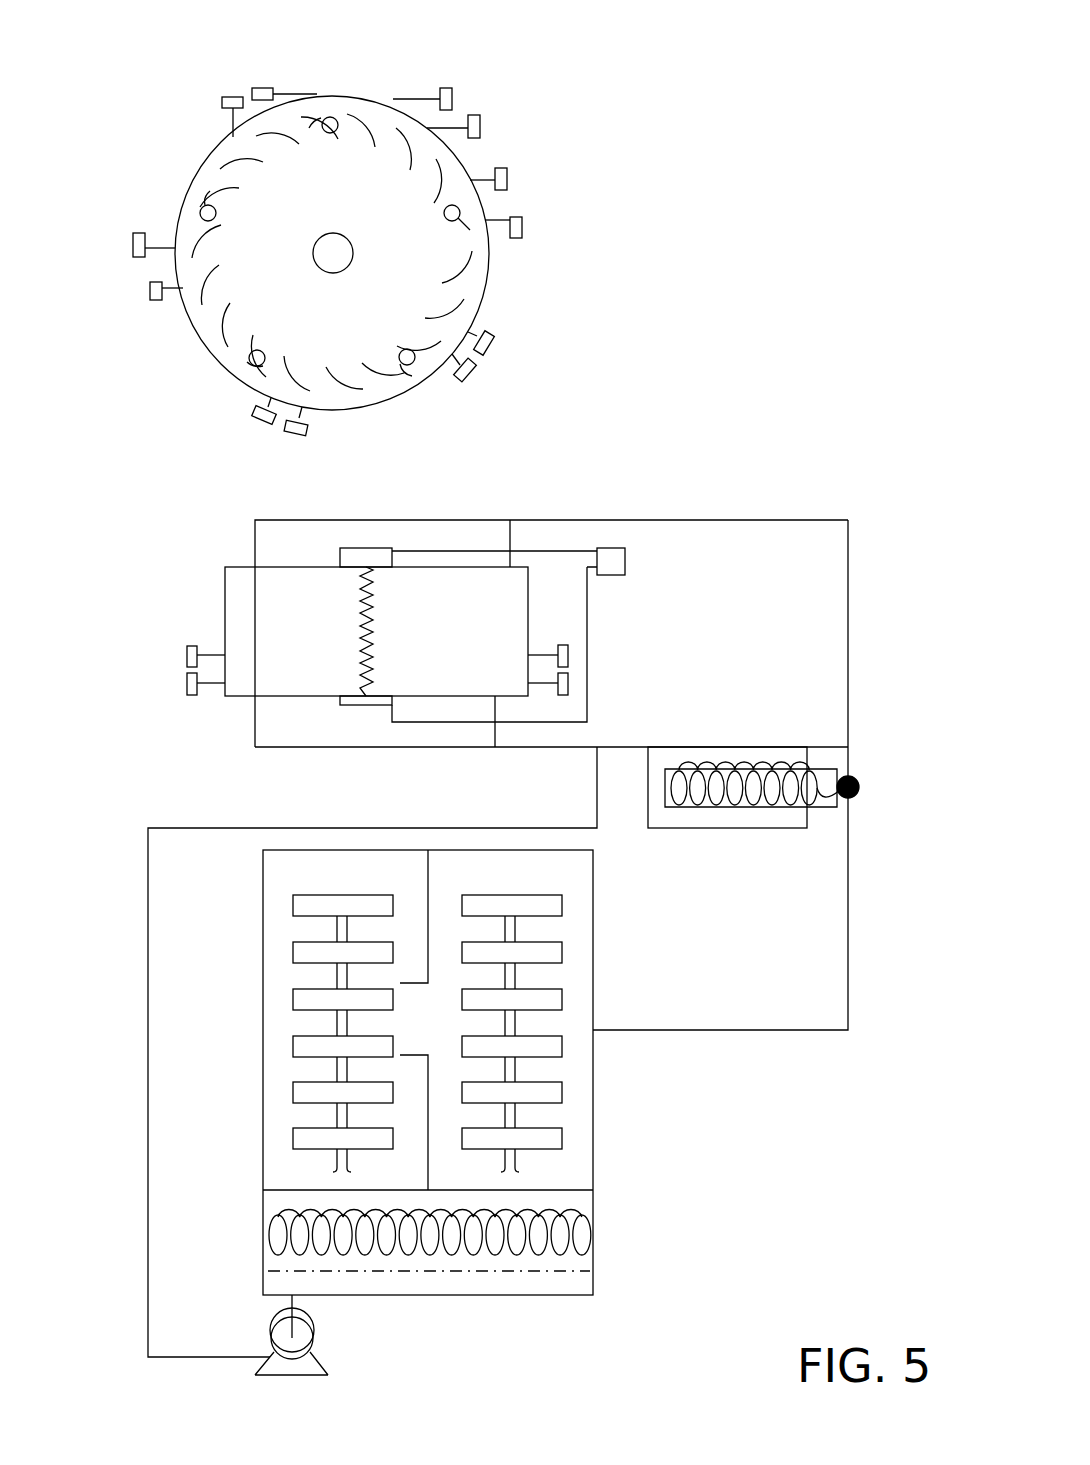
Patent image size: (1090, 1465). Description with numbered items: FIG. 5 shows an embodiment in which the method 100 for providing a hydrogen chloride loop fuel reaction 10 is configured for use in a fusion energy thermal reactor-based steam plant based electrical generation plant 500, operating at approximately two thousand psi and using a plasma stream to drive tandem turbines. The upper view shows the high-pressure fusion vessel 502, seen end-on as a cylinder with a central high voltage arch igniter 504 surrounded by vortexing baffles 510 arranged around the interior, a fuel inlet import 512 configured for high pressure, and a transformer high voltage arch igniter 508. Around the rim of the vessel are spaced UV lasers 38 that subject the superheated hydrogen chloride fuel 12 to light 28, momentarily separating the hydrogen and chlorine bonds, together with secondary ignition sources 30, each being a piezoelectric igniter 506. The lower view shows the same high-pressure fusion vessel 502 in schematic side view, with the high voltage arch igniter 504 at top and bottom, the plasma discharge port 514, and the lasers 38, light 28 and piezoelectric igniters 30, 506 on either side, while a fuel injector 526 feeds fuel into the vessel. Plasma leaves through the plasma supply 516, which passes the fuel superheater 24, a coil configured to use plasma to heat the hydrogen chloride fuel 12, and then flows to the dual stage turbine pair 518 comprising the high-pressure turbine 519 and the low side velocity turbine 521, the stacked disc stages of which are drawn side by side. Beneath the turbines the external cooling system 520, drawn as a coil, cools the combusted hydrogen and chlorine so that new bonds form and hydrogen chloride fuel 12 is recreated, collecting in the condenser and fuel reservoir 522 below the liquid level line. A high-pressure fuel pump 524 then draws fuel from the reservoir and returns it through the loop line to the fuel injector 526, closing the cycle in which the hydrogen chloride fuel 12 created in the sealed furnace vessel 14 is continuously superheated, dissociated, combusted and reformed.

The hydrogen chloride loop fuel reaction 10 is at (744, 101).
The method for providing hydrogen chloride loop fuel reaction 100 is at (658, 133).
The hydrogen chloride fuel 12 is at (880, 585).
The sealed furnace vessel 14 is at (928, 788).
The fuel superheater 24 is at (741, 836).
The light 28 is at (233, 96).
The secondary ignition source 30 is at (389, 341).
The UV laser 38 is at (224, 140).
The fusion energy thermal reactor-based steam plant based electrical generation plan 500 is at (803, 283).
The high-pressure fusion vessel 502 is at (176, 148).
The high voltage arch igniter 504 is at (349, 236).
The piezoelectric igniter 506 is at (258, 88).
The transformer high voltage arch igniter 508 is at (403, 368).
The vortexing baffles 510 is at (447, 297).
The fuel inlet import 512 is at (400, 348).
The plasma discharge port 514 is at (500, 580).
The plasma supply 516 is at (849, 702).
The dual stage turbine pair 518 is at (600, 905).
The high-pressure turbine 519 is at (493, 886).
The external cooling system 520 is at (604, 1240).
The low side velocity turbine 521 is at (325, 886).
The condenser and fuel reservoir 522 is at (602, 1300).
The high-pressure fuel pump 524 is at (315, 1332).
The fuel injector 526 is at (238, 715).